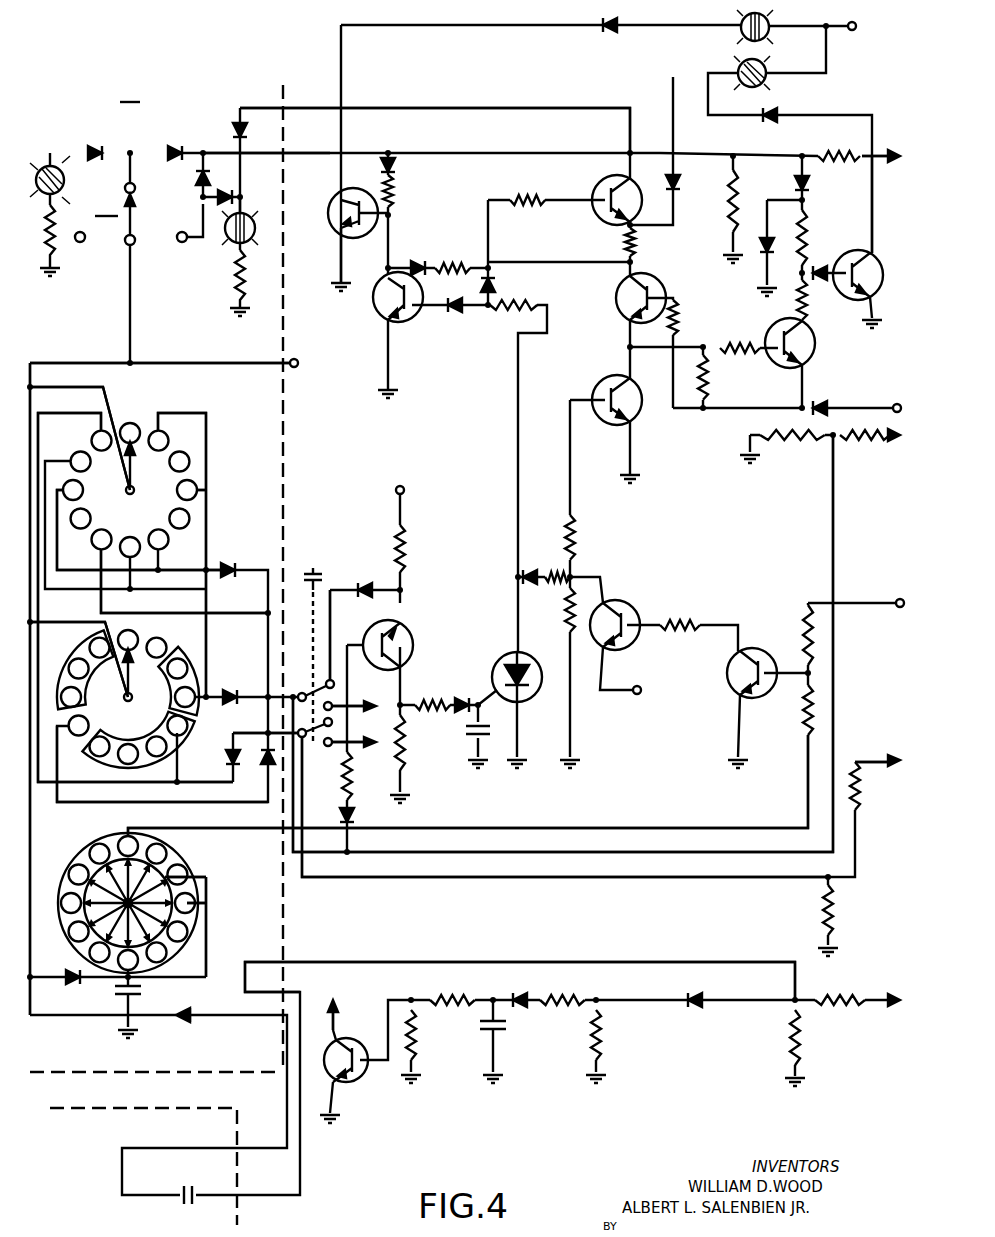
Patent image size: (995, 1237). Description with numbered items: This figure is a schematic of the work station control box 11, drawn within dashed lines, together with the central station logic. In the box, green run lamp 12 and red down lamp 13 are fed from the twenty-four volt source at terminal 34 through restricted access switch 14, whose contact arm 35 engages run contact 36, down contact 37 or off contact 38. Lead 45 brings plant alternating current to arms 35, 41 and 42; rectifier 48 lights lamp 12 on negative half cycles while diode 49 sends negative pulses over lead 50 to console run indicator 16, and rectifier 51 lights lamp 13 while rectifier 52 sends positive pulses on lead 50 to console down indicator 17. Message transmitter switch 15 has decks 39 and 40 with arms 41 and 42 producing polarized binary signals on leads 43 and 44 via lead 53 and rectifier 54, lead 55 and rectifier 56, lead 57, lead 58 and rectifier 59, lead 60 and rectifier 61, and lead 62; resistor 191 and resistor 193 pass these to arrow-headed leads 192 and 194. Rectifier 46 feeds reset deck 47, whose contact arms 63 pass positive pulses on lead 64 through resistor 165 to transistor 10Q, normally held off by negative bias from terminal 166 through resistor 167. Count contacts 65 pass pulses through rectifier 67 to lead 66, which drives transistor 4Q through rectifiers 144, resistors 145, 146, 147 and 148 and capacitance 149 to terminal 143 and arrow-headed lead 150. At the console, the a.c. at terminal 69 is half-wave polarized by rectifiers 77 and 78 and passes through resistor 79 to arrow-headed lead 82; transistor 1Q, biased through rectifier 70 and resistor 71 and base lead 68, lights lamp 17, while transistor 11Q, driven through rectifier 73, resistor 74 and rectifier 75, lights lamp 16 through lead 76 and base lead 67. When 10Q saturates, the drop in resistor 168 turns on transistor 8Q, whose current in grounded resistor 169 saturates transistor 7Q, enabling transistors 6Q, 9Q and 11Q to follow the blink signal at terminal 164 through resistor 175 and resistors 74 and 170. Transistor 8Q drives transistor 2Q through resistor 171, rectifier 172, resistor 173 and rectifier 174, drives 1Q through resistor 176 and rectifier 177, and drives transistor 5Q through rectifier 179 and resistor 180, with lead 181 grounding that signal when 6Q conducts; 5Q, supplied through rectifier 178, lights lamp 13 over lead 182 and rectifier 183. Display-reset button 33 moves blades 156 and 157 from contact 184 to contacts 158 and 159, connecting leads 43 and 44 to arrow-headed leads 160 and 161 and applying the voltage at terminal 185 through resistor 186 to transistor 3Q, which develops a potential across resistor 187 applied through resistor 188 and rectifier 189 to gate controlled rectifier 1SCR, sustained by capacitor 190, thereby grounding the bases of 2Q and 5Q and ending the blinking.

The work station control box 11 is at (132, 92).
The run indicator lamp 12 is at (50, 160).
The down indicator lamp 13 is at (247, 252).
The restricted access switch 14 is at (115, 214).
The message transmitter switch 15 is at (132, 529).
The run indicator 16 is at (768, 62).
The down indicator 17 is at (736, 16).
The display-reset button 33 is at (310, 563).
The terminal 34 is at (297, 359).
The contact arm 35 is at (135, 245).
The run contact 36 is at (137, 189).
The down contact 37 is at (183, 242).
The off contact 38 is at (83, 242).
The deck of switch 15 39 is at (196, 484).
The deck of switch 15 40 is at (68, 658).
The contact arm 41 is at (132, 474).
The contact arm 42 is at (94, 666).
The lead 43 is at (833, 533).
The lead 44 is at (525, 883).
The lead 45 is at (188, 360).
The rectifier 46 is at (72, 972).
The reset deck 47 is at (197, 925).
The rectifier 48 is at (91, 139).
The diode 49 is at (174, 139).
The lead 50 is at (266, 141).
The rectifier 51 is at (238, 193).
The rectifier 52 is at (215, 175).
The lead 53 is at (208, 432).
The rectifier 54 is at (226, 570).
The lead 55 is at (200, 645).
The rectifier 56 is at (228, 688).
The lead 57 is at (250, 612).
The lead 58 is at (138, 744).
The rectifier 59 is at (224, 762).
The lead 60 is at (162, 764).
The rectifier 61 is at (264, 768).
The lead 62 is at (40, 414).
The contact arms 63 is at (175, 940).
The lead 64 is at (192, 828).
The count contacts 65 is at (196, 1192).
The lead 66 is at (248, 985).
The rectifier 67 is at (826, 262).
The base lead 68 is at (365, 255).
The terminal 69 is at (869, 29).
The rectifier 70 is at (396, 165).
The resistor 71 is at (401, 191).
The rectifier 73 is at (810, 183).
The resistor 74 is at (810, 220).
The rectifier 75 is at (812, 300).
The lead 76 is at (887, 204).
The rectifier 77 is at (608, 20).
The rectifier 78 is at (775, 110).
The resistor 79 is at (839, 146).
The output arrow 82 is at (885, 152).
The terminal 143 is at (341, 1007).
The rectifiers 144 is at (615, 988).
The resistor 145 is at (429, 1035).
The resistor 146 is at (452, 989).
The resistor 147 is at (562, 989).
The resistor 148 is at (614, 1035).
The capacitance 149 is at (506, 1025).
The arrow-headed lead 150 is at (845, 1029).
The switch blade 156 is at (306, 690).
The switch blade 157 is at (310, 745).
The contact 158 is at (336, 680).
The contact 159 is at (348, 752).
The arrow-headed lead 160 is at (355, 702).
The arrow-headed lead 161 is at (353, 745).
The terminal 164 is at (898, 402).
The resistor 165 is at (798, 730).
The terminal 166 is at (896, 606).
The resistor 167 is at (803, 620).
The resistor 168 is at (690, 613).
The grounded resistor 169 is at (564, 598).
The resistor 170 is at (810, 300).
The resistor 171 is at (565, 540).
The rectifier 172 is at (522, 568).
The resistor 173 is at (500, 310).
The rectifier 174 is at (452, 312).
The resistor 175 is at (690, 317).
The resistor 176 is at (452, 256).
The rectifier 177 is at (414, 257).
The rectifier 178 is at (682, 180).
The rectifier 179 is at (496, 290).
The resistor 180 is at (524, 189).
The lead 181 is at (545, 262).
The lead 182 is at (548, 112).
The rectifier 183 is at (238, 124).
The contact 184 is at (294, 678).
The terminal 185 is at (395, 492).
The resistor 186 is at (393, 558).
The resistor 187 is at (416, 742).
The resistor 188 is at (430, 692).
The rectifier 189 is at (468, 693).
The capacitor 190 is at (480, 738).
The resistor 191 is at (842, 445).
The arrow-headed lead 192 is at (870, 447).
The resistor 193 is at (858, 806).
The arrow-headed lead 194 is at (876, 751).
The transistor 1Q is at (353, 206).
The transistor 2Q is at (402, 303).
The transistor 3Q is at (395, 642).
The transistor 4Q is at (349, 1044).
The transistor 5Q is at (612, 192).
The transistor 6Q is at (641, 288).
The transistor 7Q is at (603, 424).
The transistor 8Q is at (639, 643).
The transistor 9Q is at (776, 356).
The transistor 10Q is at (755, 662).
The transistor 11Q is at (858, 265).
The controlled rectifier 1SCR is at (505, 660).